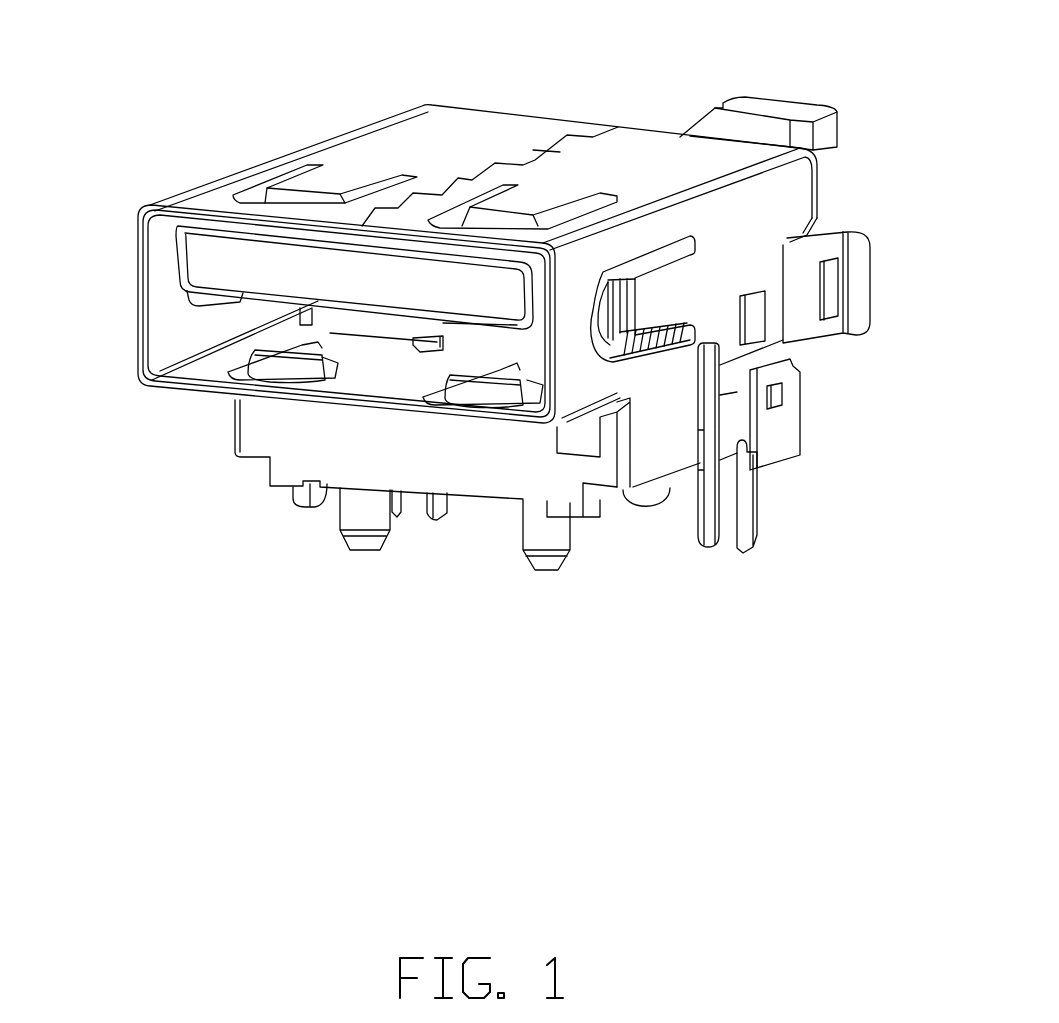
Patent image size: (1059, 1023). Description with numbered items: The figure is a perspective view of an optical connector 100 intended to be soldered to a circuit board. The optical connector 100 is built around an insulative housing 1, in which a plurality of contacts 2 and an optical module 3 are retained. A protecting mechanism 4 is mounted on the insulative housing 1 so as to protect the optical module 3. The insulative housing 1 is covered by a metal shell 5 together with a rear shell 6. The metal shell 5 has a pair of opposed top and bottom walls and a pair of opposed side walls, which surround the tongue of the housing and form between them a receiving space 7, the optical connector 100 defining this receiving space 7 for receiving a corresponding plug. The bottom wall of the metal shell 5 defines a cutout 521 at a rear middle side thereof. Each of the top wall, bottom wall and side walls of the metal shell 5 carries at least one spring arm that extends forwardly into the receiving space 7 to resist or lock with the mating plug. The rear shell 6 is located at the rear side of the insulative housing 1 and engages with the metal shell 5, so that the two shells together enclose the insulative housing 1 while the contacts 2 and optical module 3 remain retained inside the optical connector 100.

The optical connector 100 is at (243, 128).
The insulative housing 1 is at (647, 450).
The contacts 2 is at (745, 502).
The optical module 3 is at (757, 120).
The protecting mechanism 4 is at (493, 340).
The metal shell 5 is at (353, 147).
The cutout 521 is at (426, 346).
The rear shell 6 is at (783, 433).
The receiving space 7 is at (383, 383).